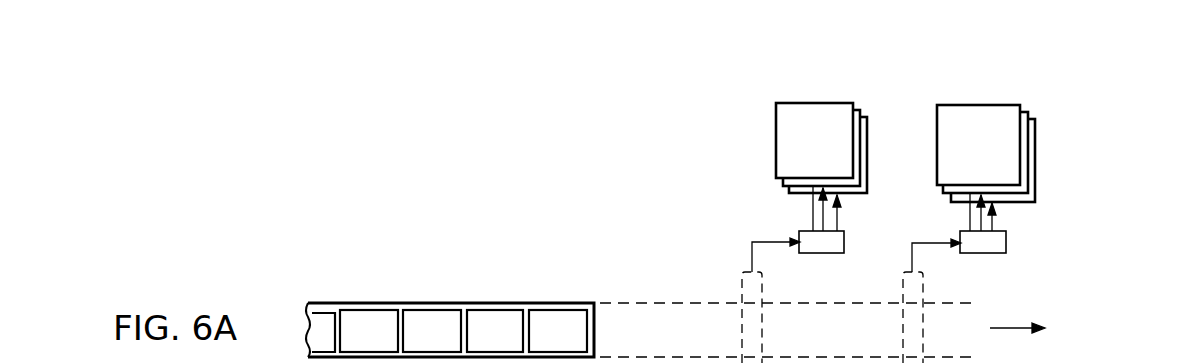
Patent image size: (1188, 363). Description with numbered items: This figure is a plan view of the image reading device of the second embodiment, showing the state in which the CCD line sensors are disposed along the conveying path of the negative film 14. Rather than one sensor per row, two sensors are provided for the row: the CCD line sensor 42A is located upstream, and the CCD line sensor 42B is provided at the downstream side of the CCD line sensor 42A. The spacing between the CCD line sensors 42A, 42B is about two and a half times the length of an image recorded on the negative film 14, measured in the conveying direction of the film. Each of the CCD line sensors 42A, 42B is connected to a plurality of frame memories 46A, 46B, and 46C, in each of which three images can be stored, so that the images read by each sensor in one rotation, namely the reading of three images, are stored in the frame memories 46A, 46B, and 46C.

The negative film 14 is at (430, 302).
The CCD line sensor 42A is at (742, 287).
The CCD line sensor 42B is at (925, 277).
The frame memory 46A is at (798, 113).
The frame memory 46B is at (866, 96).
The frame memory 46C is at (868, 117).